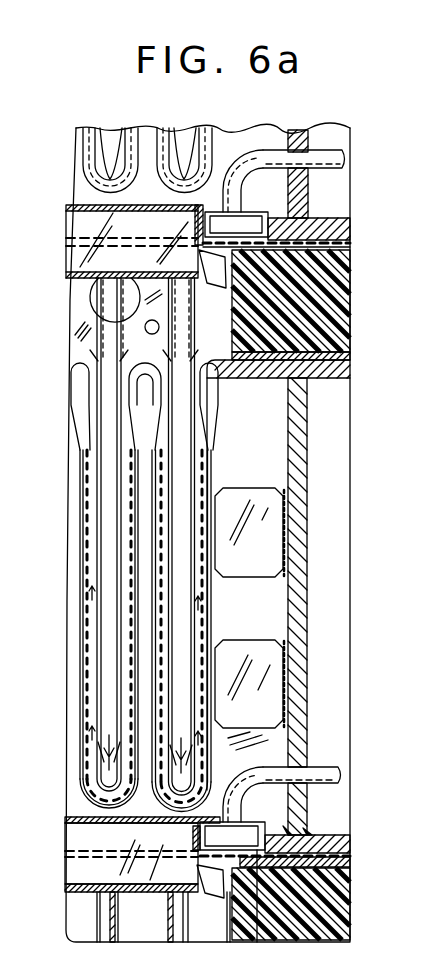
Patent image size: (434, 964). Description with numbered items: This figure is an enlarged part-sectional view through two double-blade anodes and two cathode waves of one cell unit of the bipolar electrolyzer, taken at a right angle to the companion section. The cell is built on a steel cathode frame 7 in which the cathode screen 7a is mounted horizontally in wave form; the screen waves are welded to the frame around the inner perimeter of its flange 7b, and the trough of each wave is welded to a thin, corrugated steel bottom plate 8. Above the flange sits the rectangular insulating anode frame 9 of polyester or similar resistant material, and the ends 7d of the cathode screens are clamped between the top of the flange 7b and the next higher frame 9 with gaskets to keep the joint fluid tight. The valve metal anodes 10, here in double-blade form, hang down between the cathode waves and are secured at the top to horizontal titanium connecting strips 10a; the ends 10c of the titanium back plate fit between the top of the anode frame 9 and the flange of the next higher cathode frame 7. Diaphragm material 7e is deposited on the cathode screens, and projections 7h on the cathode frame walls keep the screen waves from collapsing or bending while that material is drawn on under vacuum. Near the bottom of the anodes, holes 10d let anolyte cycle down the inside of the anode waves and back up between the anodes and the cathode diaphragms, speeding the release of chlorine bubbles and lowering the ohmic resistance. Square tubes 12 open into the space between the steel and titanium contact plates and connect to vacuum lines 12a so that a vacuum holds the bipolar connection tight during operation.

The cathode frame 7 is at (303, 623).
The cathode screen 7a is at (185, 600).
The flange 7b is at (333, 370).
The ends of the cathode screens 7d is at (256, 356).
The diaphragm material 7e is at (208, 448).
The projections 7h is at (232, 505).
The bottom plate 8 is at (194, 806).
The anode frame 9 is at (333, 294).
The anodes 10 is at (206, 408).
The connecting strips 10a is at (117, 330).
The ends of the back plates 10c is at (317, 218).
The holes 10d is at (120, 792).
The square tubes 12 is at (247, 220).
The vacuum lines 12a is at (342, 158).